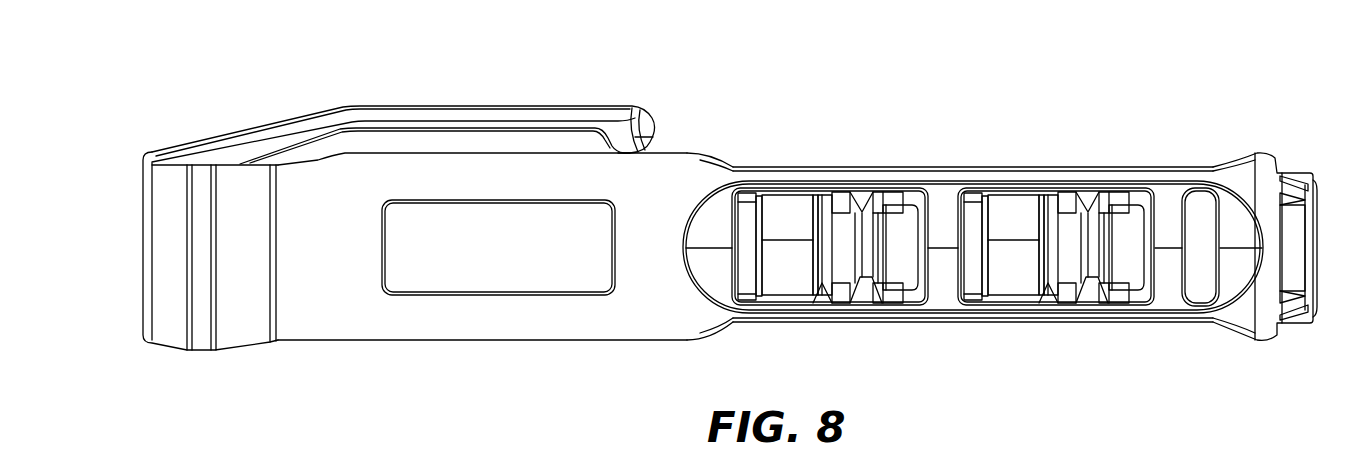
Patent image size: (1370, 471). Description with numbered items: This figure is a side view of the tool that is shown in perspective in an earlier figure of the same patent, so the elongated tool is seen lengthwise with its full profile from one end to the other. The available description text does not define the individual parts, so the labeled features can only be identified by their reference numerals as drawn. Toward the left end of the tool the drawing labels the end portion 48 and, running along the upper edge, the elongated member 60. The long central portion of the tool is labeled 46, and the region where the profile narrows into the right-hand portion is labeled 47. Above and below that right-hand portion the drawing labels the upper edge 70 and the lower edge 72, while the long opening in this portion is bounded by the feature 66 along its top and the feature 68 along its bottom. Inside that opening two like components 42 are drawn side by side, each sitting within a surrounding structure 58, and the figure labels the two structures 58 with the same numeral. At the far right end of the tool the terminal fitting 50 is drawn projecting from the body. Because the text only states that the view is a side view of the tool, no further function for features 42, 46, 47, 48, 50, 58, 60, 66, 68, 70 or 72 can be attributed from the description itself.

The cartridge 42 is at (791, 277).
The housing body 46 is at (810, 87).
The neck transition 47 is at (725, 165).
The end cap 48 is at (202, 125).
The connector end 50 is at (1153, 145).
The cartridge holder 58 is at (867, 333).
The clip 60 is at (477, 115).
The channel upper wall 66 is at (957, 163).
The channel lower wall 68 is at (953, 330).
The upper sidewall 70 is at (892, 125).
The lower sidewall 72 is at (953, 383).